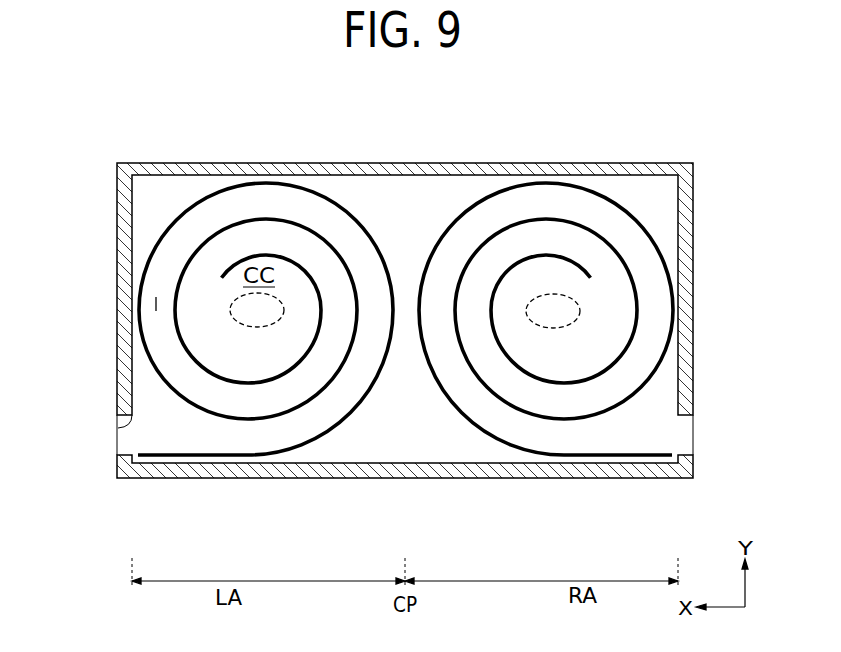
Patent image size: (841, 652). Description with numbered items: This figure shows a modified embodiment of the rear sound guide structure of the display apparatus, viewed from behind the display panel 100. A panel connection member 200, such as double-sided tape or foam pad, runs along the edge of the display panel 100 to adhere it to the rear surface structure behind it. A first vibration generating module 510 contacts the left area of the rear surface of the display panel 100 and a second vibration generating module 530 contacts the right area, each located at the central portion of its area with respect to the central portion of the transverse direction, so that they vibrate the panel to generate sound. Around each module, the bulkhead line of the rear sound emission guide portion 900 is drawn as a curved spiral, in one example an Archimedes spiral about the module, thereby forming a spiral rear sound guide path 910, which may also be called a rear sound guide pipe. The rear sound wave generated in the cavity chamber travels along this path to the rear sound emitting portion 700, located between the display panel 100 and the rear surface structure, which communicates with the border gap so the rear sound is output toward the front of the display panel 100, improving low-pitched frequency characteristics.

The display panel 100 is at (127, 441).
The panel connection member 200 is at (125, 164).
The rear sound emitting portion 700 is at (117, 432).
The rear sound emission guide portion 900 is at (203, 193).
The rear sound guide path 910 is at (156, 304).
The first vibration generating module 510 is at (257, 328).
The second vibration generating module 530 is at (553, 328).